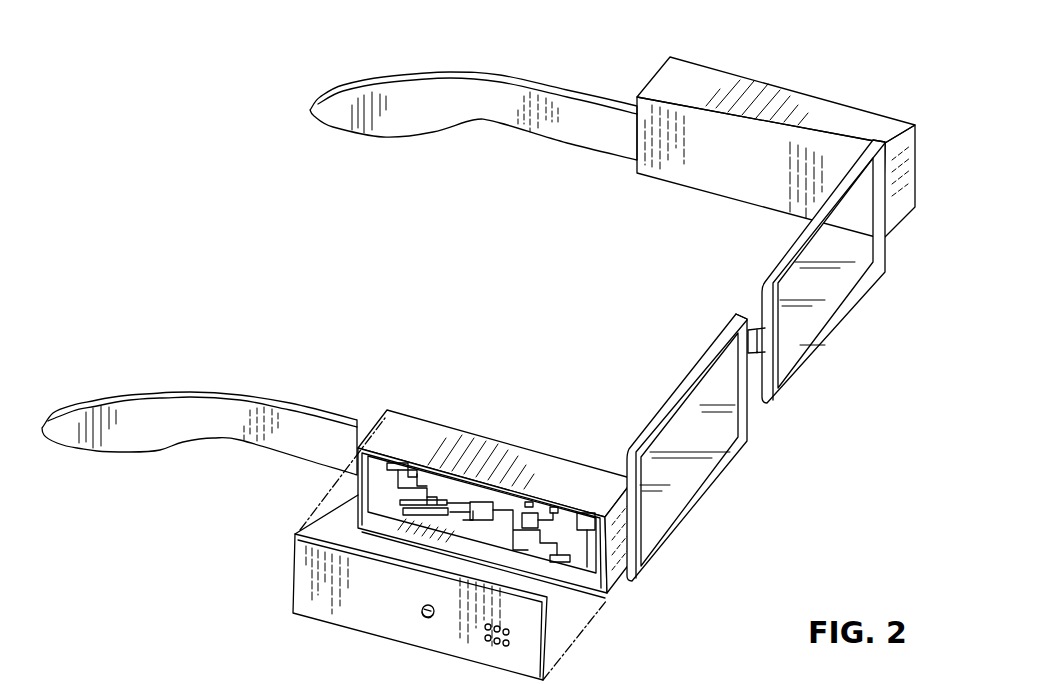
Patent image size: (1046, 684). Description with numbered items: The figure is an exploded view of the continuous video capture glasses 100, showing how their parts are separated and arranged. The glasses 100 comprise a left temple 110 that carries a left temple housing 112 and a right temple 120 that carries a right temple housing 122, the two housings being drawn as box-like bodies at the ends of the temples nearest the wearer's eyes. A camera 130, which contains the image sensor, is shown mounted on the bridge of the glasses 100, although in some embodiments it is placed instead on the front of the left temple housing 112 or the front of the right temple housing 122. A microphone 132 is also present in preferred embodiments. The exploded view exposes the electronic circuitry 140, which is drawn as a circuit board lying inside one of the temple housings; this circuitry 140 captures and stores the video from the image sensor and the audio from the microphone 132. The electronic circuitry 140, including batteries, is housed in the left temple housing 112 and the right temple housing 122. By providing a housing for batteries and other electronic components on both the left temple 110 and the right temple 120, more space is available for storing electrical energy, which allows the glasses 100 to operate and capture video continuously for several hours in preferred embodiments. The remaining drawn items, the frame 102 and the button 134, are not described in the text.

The continuous video capture glasses 100 is at (500, 340).
The frame 102 is at (544, 5).
The left temple 110 is at (580, 129).
The left temple housing 112 is at (748, 187).
The right temple 120 is at (289, 398).
The right temple housing 122 is at (530, 466).
The camera 130 is at (762, 347).
The microphone 132 is at (687, 447).
The button 134 is at (419, 615).
The electronic circuitry 140 is at (377, 495).